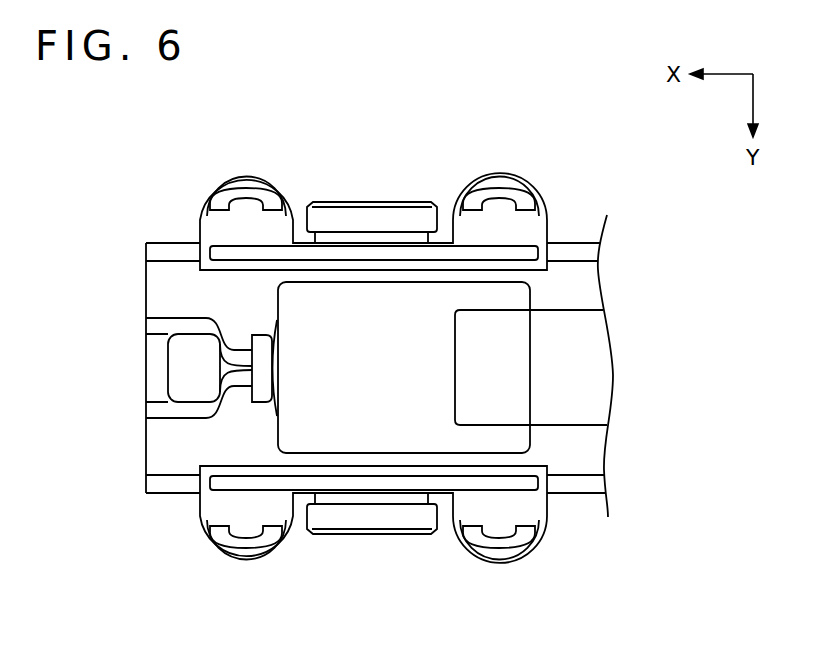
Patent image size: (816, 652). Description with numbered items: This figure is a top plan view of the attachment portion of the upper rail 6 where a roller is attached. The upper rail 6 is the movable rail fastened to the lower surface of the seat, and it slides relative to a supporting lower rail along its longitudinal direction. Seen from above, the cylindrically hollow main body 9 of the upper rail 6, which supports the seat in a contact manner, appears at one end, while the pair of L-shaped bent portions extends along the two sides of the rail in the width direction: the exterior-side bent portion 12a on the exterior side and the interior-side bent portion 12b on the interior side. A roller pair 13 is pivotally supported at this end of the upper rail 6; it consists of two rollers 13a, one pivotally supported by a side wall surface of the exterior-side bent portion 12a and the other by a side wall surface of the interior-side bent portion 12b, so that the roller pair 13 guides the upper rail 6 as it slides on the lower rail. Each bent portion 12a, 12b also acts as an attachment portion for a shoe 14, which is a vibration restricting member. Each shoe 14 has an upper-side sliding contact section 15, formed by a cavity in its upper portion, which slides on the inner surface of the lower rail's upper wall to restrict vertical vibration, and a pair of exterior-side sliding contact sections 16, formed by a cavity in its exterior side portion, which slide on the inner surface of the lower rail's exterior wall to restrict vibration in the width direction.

The upper rail 6 is at (572, 243).
The main body 9 is at (573, 322).
The exterior-side bent portion 12a is at (147, 251).
The interior-side bent portion 12b is at (147, 487).
The roller pair 13 is at (435, 368).
The roller 13a is at (405, 515).
The shoe 14 is at (502, 173).
The upper-side sliding contact section 15 is at (232, 250).
The exterior-side sliding contact section 16 is at (247, 173).